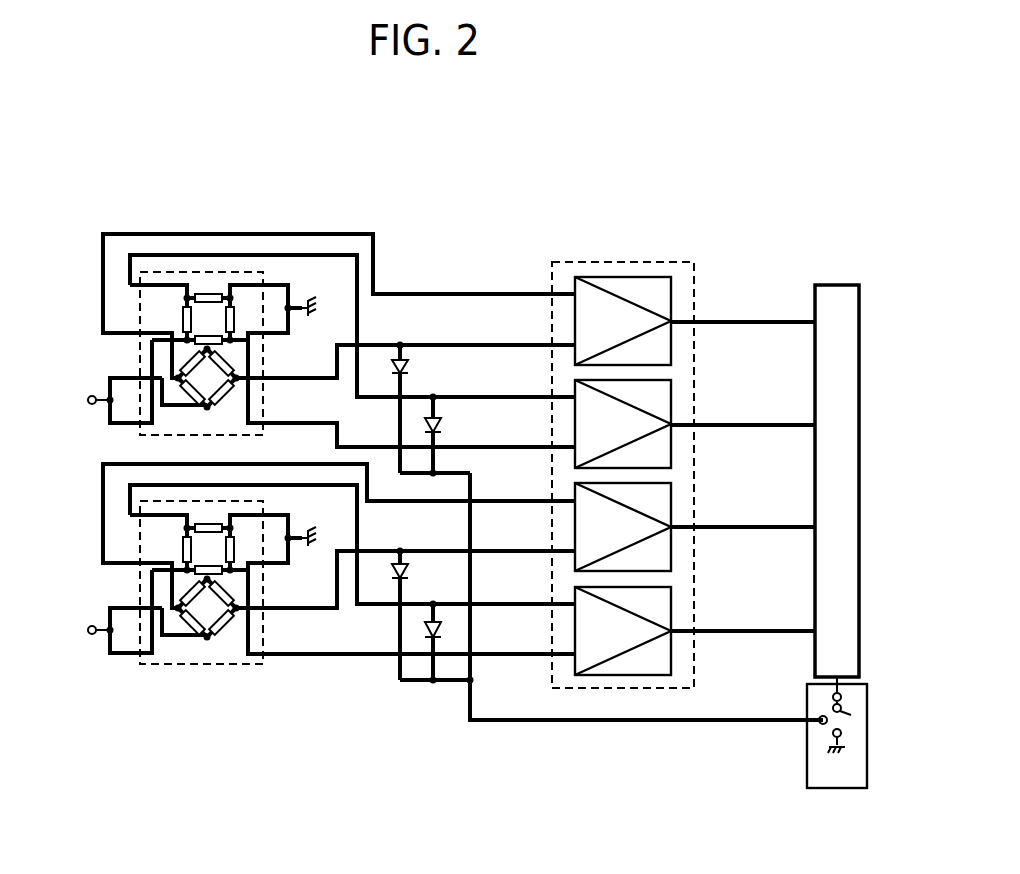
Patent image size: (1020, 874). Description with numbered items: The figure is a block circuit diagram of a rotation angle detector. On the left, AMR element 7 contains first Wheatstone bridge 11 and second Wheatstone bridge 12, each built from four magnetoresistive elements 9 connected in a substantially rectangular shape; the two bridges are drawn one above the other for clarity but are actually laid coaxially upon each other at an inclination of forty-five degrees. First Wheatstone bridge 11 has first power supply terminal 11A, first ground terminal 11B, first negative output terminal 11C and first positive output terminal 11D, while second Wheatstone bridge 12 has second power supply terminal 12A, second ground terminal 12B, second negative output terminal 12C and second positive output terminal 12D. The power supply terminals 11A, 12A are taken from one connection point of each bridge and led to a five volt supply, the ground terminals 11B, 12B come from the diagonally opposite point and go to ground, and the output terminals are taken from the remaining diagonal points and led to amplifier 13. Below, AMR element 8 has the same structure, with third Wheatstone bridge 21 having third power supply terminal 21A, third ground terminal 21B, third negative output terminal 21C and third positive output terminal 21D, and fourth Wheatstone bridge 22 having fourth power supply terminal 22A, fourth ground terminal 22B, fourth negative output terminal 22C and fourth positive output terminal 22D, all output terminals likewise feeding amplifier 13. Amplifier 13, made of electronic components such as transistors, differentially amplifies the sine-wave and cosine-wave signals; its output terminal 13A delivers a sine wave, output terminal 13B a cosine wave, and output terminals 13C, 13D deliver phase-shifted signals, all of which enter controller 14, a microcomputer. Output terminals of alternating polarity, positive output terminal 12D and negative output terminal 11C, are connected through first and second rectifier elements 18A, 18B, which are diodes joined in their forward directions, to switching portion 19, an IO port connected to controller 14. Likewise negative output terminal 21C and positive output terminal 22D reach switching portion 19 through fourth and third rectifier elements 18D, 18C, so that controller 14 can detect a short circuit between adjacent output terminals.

The AMR element 7 is at (157, 270).
The AMR element 8 is at (193, 664).
The magnetoresistive element 9 is at (203, 296).
The first Wheatstone bridge 11 is at (144, 267).
The first power supply terminal 11A is at (123, 423).
The first ground terminal 11B is at (240, 285).
The first negative output terminal 11C is at (443, 396).
The first positive output terminal 11D is at (457, 446).
The second Wheatstone bridge 12 is at (198, 408).
The second power supply terminal 12A is at (127, 377).
The second ground terminal 12B is at (270, 331).
The second negative output terminal 12C is at (393, 293).
The second positive output terminal 12D is at (423, 344).
The amplifier 13 is at (603, 261).
The output terminal 13A is at (715, 320).
The output terminal 13B is at (792, 423).
The output terminal 13C is at (715, 529).
The output terminal 13D is at (783, 633).
The controller 14 is at (845, 285).
The first rectifier element 18A is at (397, 352).
The second rectifier element 18B is at (423, 425).
The third rectifier element 18C is at (393, 573).
The fourth rectifier element 18D is at (427, 625).
The switching portion 19 is at (842, 788).
The third Wheatstone bridge 21 is at (177, 547).
The third power supply terminal 21A is at (125, 654).
The third ground terminal 21B is at (268, 515).
The third negative output terminal 21C is at (447, 603).
The third positive output terminal 21D is at (457, 656).
The fourth Wheatstone bridge 22 is at (217, 640).
The fourth power supply terminal 22A is at (127, 607).
The fourth ground terminal 22B is at (283, 564).
The fourth negative output terminal 22C is at (437, 502).
The fourth positive output terminal 22D is at (378, 550).